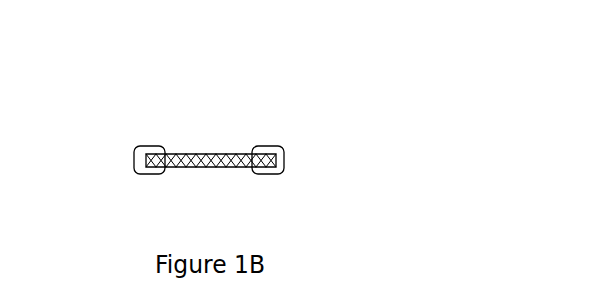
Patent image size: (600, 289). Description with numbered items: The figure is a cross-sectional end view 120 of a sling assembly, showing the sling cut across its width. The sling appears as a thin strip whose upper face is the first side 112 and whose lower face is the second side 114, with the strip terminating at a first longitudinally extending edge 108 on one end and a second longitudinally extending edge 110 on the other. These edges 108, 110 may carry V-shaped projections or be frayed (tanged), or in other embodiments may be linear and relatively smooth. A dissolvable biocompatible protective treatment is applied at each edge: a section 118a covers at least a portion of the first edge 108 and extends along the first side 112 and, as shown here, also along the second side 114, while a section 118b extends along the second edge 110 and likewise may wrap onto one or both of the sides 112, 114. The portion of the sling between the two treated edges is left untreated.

The first longitudinally extending edge 108 is at (136, 170).
The second longitudinally extending edge 110 is at (282, 169).
The first side 112 is at (224, 136).
The second side 114 is at (204, 188).
The section of protective treatment 118a is at (119, 155).
The section of protective treatment 118b is at (299, 156).
The cross-sectional end view 120 is at (384, 81).